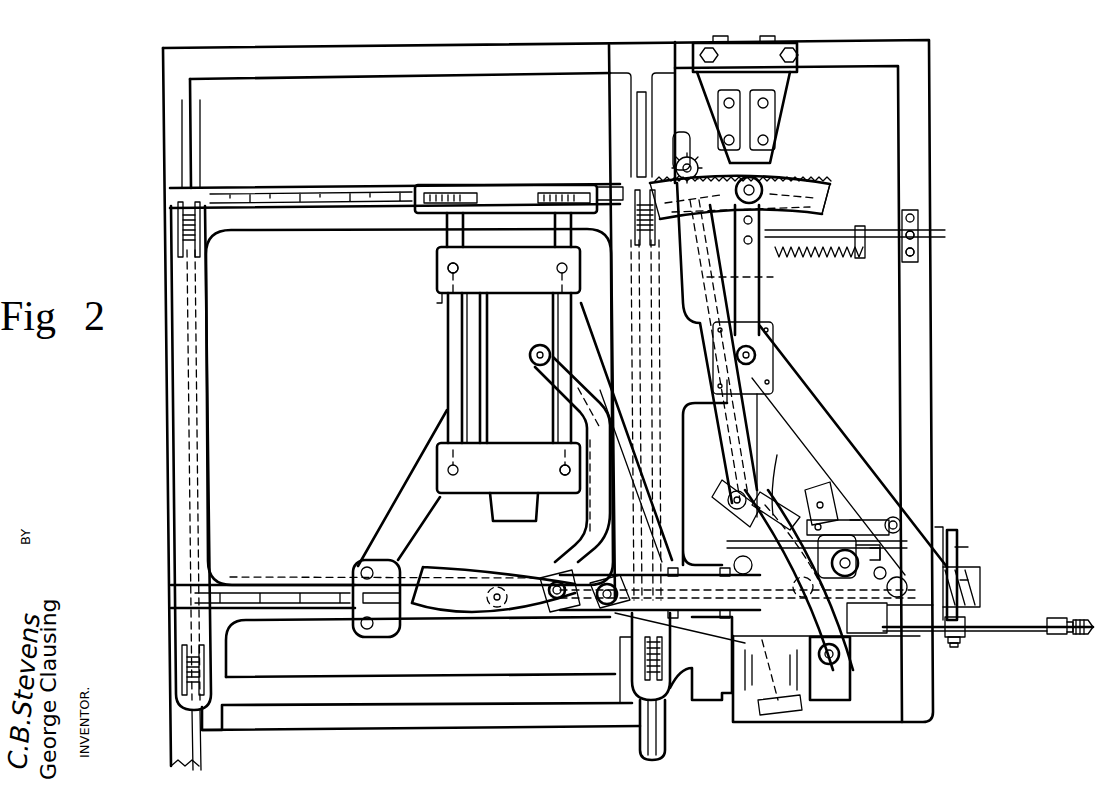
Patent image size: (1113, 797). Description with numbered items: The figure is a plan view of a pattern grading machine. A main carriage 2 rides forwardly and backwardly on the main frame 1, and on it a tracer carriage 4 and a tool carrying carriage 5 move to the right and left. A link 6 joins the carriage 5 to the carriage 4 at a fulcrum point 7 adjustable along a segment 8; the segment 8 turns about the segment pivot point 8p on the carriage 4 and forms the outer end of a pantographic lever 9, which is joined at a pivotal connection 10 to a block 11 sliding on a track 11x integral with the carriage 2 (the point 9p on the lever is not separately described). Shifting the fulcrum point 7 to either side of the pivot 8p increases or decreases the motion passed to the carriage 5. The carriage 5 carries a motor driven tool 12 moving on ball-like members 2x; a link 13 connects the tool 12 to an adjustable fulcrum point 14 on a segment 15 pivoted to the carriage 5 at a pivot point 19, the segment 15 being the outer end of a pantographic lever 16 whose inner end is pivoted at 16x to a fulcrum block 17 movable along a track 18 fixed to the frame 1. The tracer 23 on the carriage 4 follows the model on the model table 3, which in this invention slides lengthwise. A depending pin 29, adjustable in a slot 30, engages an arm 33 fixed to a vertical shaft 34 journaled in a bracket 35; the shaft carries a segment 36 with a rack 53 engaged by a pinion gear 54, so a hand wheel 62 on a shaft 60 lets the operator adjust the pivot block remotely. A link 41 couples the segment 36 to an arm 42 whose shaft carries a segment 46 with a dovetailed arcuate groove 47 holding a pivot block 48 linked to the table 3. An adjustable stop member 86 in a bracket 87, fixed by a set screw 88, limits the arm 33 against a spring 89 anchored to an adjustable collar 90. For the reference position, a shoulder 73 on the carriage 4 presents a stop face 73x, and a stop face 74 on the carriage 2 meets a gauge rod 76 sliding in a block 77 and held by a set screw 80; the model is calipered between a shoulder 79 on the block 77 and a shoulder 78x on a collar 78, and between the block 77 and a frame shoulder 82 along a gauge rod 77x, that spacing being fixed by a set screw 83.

The main frame 1 is at (245, 73).
The main carriage 2 is at (212, 337).
The ball-like members 2x is at (450, 270).
The model table 3 is at (885, 630).
The tracer carriage 4 is at (800, 570).
The tool carrying carriage 5 is at (450, 236).
The link 6 is at (676, 660).
The fulcrum point 7 is at (829, 665).
The segment 8 is at (773, 517).
The segment pivot point 8p is at (815, 590).
The pantographic lever 9 is at (767, 427).
The pivot pin 9p is at (733, 502).
The pivotal connection 10 is at (750, 355).
The block 11 is at (765, 367).
The track 11x is at (738, 395).
The motor driven tool 12 is at (520, 519).
The link 13 is at (597, 455).
The adjustable fulcrum point 14 is at (555, 602).
The segment 15 is at (443, 600).
The pantographic lever 16 is at (602, 608).
The pivot 16x is at (674, 686).
The movable fulcrum block 17 is at (735, 495).
The track 18 is at (640, 574).
The pivot point 19 is at (498, 608).
The tracer 23 is at (858, 618).
The depending pin 29 is at (860, 520).
The slot 30 is at (838, 540).
The arm 33 is at (773, 302).
The rotatable vertical shaft 34 is at (767, 173).
The bracket 35 is at (790, 100).
The segment 36 is at (808, 190).
The link 41 is at (705, 312).
The arm 42 is at (783, 472).
The segment 46 is at (810, 488).
The dovetailed arcuate groove 47 is at (832, 492).
The pivot block 48 is at (807, 527).
The rack 53 is at (818, 172).
The pinion gear 54 is at (680, 170).
The shaft 60 is at (752, 275).
The hand wheel 62 is at (779, 715).
The shoulder 73 is at (938, 540).
The stop face 73x is at (975, 532).
The stop face 74 is at (950, 640).
The rod 76 is at (1045, 635).
The block 77 is at (965, 625).
The gauge rod 77x is at (975, 578).
The collar 78 is at (1080, 636).
The shoulder 78x is at (1072, 620).
The shoulder 79 is at (960, 640).
The set screw 80 is at (955, 648).
The shoulder 82 is at (978, 595).
The set screw 83 is at (958, 556).
The adjustable stop member 86 is at (835, 238).
The bracket 87 is at (918, 214).
The set screw 88 is at (922, 231).
The spring 89 is at (888, 270).
The adjustable collar 90 is at (865, 228).